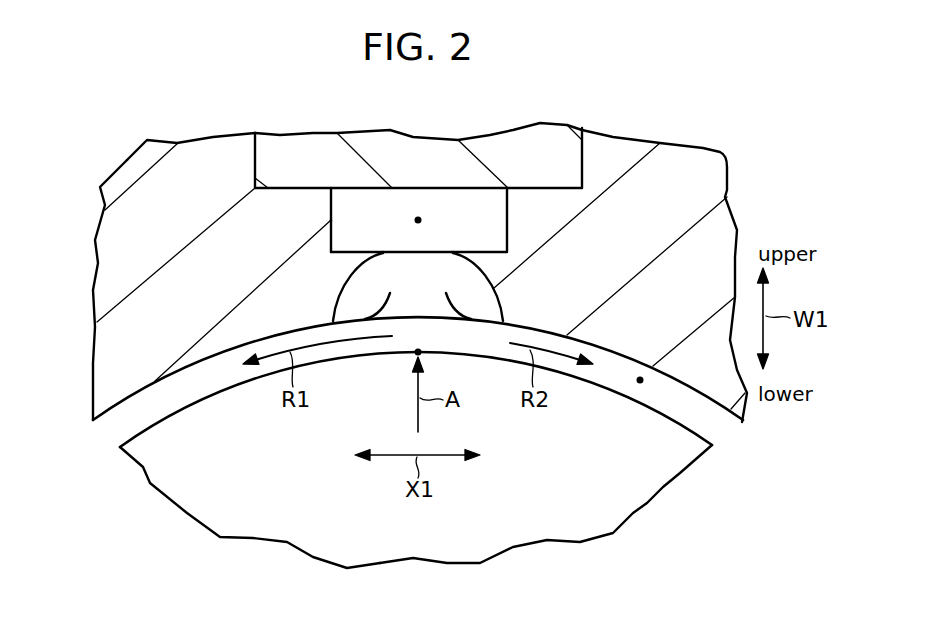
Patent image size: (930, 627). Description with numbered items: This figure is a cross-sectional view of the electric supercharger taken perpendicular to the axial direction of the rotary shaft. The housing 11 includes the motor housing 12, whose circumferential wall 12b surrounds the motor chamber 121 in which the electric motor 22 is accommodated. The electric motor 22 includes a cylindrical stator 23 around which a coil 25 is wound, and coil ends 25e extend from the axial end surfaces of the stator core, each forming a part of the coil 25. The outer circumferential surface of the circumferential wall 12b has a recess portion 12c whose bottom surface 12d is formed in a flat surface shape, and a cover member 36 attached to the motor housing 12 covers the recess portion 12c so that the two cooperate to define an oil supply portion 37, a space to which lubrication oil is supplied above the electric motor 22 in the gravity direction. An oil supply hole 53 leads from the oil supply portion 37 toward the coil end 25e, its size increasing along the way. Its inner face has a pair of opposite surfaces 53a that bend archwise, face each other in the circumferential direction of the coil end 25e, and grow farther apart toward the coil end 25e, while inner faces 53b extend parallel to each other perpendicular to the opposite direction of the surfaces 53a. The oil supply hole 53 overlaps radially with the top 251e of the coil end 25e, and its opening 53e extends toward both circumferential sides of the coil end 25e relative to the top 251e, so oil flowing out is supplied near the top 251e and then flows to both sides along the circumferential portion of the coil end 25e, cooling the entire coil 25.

The housing 11 is at (130, 164).
The motor housing 12 is at (678, 155).
The circumferential wall 12b is at (100, 243).
The recess portion 12c is at (338, 205).
The bottom surface 12d is at (331, 242).
The electric motor 22 is at (683, 411).
The stator 23 is at (143, 430).
The coil 25 is at (640, 503).
The coil end 25e is at (152, 480).
The cover member 36 is at (508, 148).
The oil supply portion 37 is at (418, 220).
The oil supply hole 53 is at (435, 286).
The opposite surfaces 53a is at (347, 297).
The inner faces 53b is at (455, 263).
The opening 53e is at (503, 327).
The motor chamber 121 is at (640, 380).
The top 251e is at (418, 352).